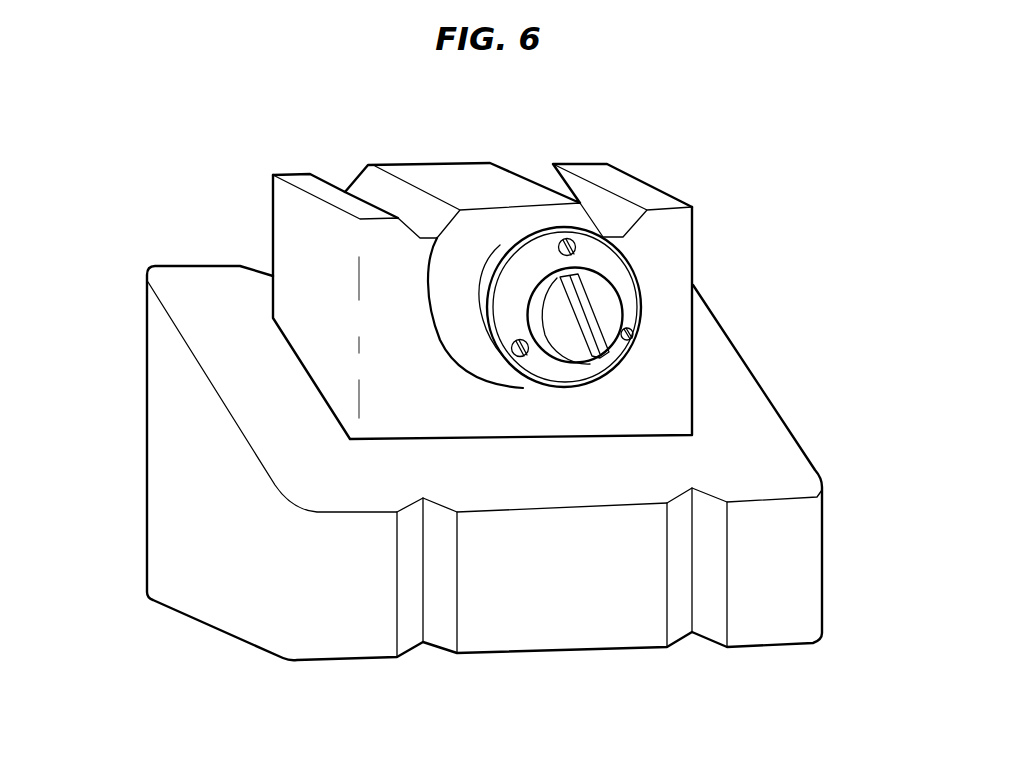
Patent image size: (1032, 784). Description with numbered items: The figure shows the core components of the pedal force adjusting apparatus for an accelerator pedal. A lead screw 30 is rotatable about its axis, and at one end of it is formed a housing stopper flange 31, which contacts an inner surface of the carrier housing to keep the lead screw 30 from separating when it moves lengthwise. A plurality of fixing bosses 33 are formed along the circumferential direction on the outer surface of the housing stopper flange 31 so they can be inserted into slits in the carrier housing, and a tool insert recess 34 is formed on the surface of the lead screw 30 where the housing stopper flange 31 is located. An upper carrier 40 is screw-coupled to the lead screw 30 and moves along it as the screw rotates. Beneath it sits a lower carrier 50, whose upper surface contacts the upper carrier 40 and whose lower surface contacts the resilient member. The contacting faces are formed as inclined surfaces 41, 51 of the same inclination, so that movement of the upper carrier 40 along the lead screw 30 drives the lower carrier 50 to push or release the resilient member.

The lead screw 30 is at (610, 293).
The housing stopper flange 31 is at (532, 257).
The fixing bosses 33 is at (571, 247).
The tool insert recess 34 is at (597, 318).
The upper carrier 40 is at (485, 168).
The inclined surface 41 is at (300, 364).
The lower carrier 50 is at (217, 597).
The inclined surface 51 is at (760, 435).